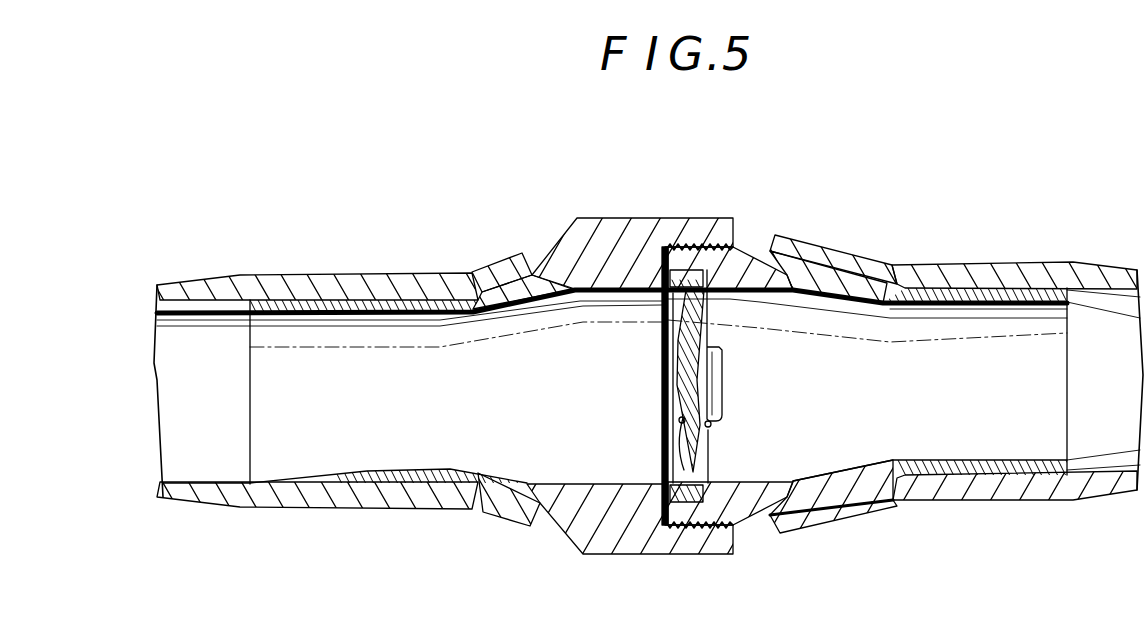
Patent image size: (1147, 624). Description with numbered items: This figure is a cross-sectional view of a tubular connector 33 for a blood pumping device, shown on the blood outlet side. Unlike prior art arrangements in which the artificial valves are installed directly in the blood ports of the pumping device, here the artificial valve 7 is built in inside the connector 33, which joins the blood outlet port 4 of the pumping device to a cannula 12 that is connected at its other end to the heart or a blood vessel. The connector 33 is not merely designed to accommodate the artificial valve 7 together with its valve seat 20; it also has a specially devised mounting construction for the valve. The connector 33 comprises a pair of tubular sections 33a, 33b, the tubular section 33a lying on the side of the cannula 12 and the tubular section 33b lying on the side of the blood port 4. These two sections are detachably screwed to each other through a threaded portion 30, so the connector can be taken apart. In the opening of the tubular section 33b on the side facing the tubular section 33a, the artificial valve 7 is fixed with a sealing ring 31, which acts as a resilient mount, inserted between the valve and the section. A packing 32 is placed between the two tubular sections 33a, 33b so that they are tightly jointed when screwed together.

The blood outlet port 4 is at (950, 278).
The artificial valve 7 is at (719, 348).
The cannula 12 is at (345, 283).
The valve seat 20 is at (707, 294).
The threaded portion 30 is at (690, 243).
The sealing ring 31 is at (699, 268).
The packing 32 is at (658, 260).
The tubular connector 33 is at (553, 236).
The tubular section 33a is at (543, 287).
The tubular section 33b is at (835, 278).